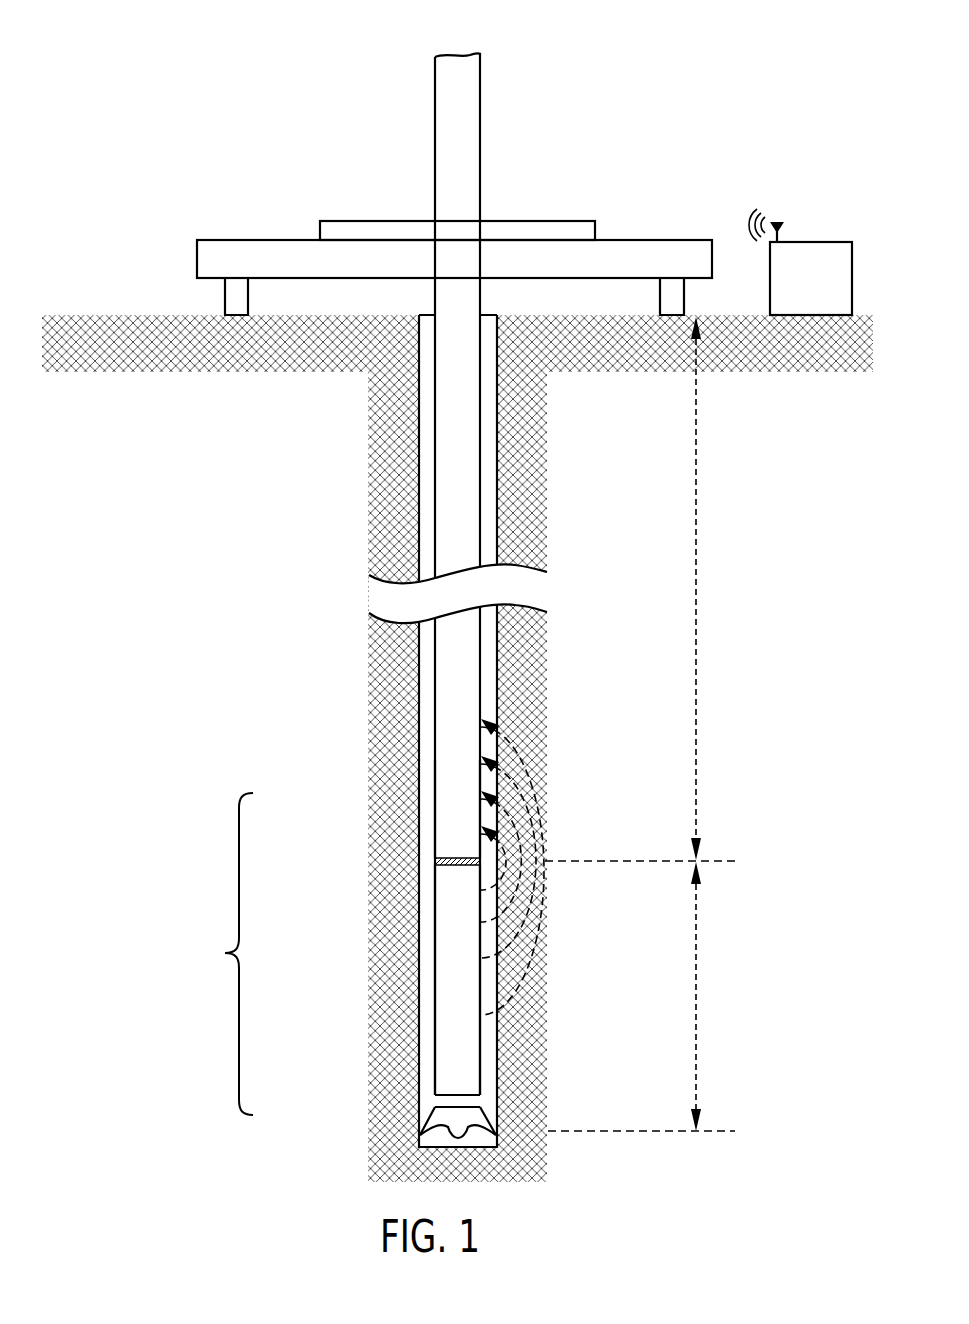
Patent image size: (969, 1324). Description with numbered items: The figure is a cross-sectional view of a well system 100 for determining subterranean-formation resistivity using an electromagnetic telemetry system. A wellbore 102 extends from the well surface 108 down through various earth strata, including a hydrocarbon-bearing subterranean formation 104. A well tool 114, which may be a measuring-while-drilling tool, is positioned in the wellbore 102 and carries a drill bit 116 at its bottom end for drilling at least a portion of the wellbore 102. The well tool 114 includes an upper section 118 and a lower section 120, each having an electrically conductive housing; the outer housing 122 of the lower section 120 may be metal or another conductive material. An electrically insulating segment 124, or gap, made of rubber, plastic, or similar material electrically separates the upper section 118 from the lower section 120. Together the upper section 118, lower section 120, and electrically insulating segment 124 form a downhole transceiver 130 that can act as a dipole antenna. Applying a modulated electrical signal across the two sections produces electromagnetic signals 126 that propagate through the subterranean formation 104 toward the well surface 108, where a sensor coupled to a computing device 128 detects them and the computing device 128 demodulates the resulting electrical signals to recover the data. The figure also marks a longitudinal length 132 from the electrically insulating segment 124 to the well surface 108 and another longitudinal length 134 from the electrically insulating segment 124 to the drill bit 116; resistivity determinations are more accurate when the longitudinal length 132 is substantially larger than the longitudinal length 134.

The well system 100 is at (690, 76).
The wellbore 102 is at (418, 444).
The subterranean formation 104 is at (545, 422).
The well surface 108 is at (427, 314).
The well tool 114 is at (434, 529).
The drill bit 116 is at (486, 1117).
The upper section 118 is at (435, 843).
The lower section 120 is at (437, 1015).
The outer housing 122 is at (436, 1063).
The electrically insulating segment 124 is at (435, 862).
The electromagnetic signals 126 is at (532, 937).
The computing device 128 is at (830, 278).
The downhole transceiver 130 is at (225, 953).
The longitudinal length 132 is at (698, 588).
The longitudinal length 134 is at (698, 1000).